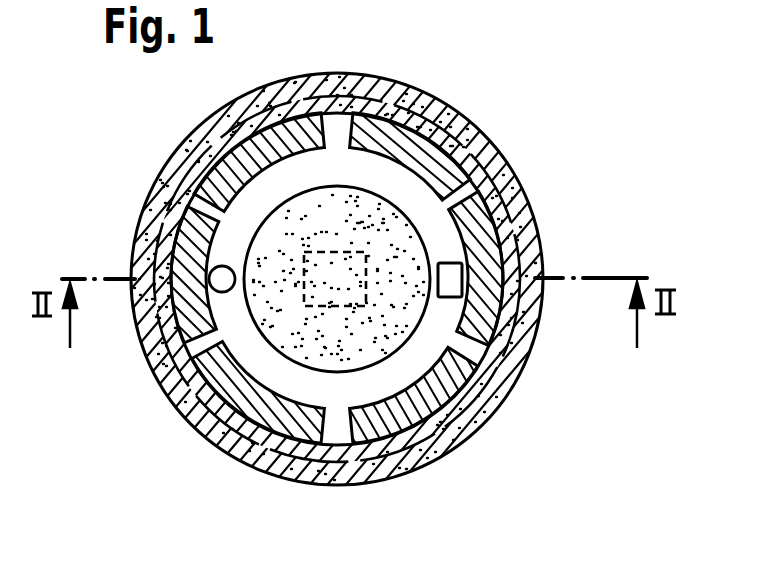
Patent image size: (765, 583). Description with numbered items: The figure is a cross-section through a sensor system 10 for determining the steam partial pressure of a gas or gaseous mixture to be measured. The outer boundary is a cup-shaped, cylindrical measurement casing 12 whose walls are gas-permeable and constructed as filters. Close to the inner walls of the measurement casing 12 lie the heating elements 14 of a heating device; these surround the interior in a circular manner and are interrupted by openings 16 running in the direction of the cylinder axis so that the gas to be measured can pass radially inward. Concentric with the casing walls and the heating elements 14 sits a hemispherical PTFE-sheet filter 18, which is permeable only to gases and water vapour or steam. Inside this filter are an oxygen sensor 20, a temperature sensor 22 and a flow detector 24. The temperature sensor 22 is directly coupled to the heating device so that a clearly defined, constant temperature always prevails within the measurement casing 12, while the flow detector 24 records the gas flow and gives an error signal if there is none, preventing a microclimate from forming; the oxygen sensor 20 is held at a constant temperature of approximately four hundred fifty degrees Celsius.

The sensor system 10 is at (550, 126).
The measurement casing 12 is at (447, 116).
The heating elements 14 is at (190, 140).
The openings 16 is at (467, 204).
The PTFE-sheet filter 18 is at (297, 363).
The oxygen sensor 20 is at (293, 262).
The temperature sensor 22 is at (222, 288).
The flow detector 24 is at (463, 302).